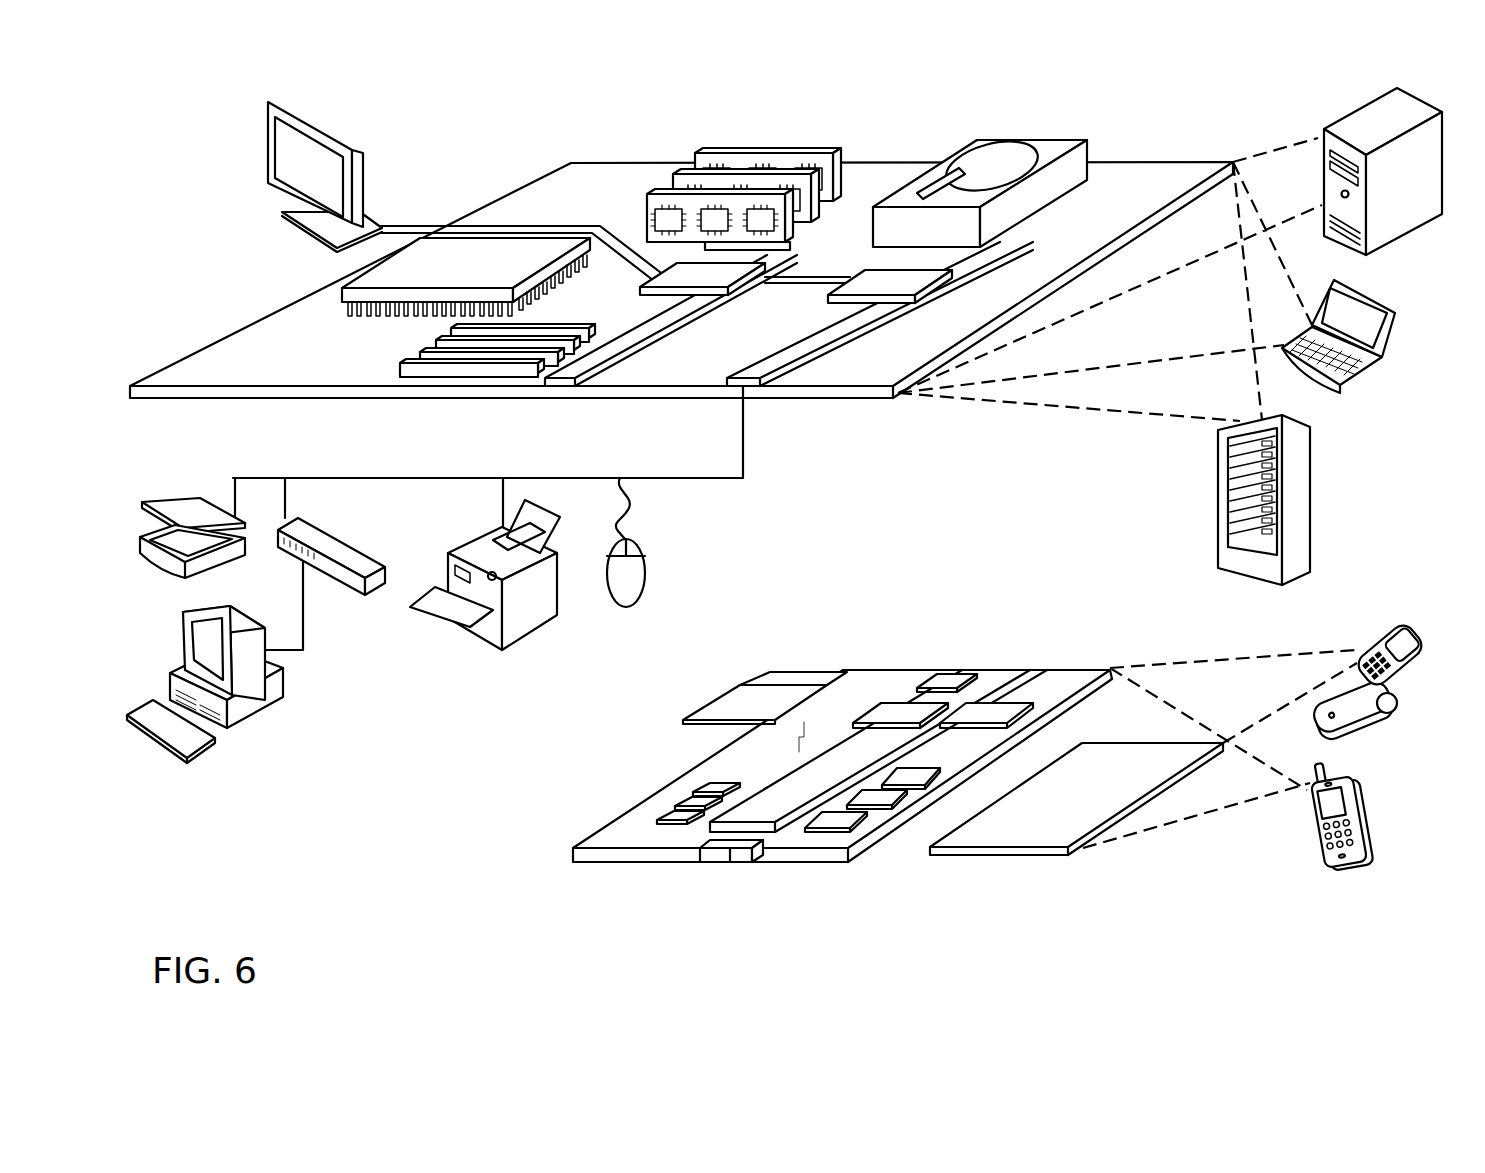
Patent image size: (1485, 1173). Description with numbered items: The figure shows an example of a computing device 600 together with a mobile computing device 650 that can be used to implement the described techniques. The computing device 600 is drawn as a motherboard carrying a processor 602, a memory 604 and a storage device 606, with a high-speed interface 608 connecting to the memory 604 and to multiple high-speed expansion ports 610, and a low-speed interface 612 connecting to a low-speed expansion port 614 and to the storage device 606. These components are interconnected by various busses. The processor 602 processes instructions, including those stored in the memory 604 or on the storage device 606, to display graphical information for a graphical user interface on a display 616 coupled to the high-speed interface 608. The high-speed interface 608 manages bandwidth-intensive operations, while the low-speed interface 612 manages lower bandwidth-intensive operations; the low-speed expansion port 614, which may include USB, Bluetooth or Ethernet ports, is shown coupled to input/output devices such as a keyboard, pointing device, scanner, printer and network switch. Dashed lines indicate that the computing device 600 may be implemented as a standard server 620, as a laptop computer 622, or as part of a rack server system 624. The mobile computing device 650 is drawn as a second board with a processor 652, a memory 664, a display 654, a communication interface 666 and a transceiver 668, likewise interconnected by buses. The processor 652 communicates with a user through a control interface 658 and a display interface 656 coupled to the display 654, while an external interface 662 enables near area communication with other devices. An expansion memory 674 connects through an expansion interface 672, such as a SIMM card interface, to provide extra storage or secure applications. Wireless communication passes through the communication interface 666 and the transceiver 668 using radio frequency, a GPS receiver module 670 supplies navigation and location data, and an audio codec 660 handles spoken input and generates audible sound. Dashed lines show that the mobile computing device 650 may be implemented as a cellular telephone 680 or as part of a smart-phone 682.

The computing device 600 is at (488, 133).
The processor 602 is at (345, 292).
The memory 604 is at (707, 152).
The storage device 606 is at (959, 140).
The high-speed interface 608 is at (678, 272).
The high-speed expansion ports 610 is at (420, 353).
The low-speed interface 612 is at (871, 278).
The low-speed expansion port 614 is at (760, 387).
The display 616 is at (268, 101).
The standard server 620 is at (1323, 147).
The laptop computer 622 is at (1340, 391).
The rack server system 624 is at (1218, 522).
The mobile computing device 650 is at (548, 858).
The processor 652 is at (770, 816).
The display 654 is at (1030, 834).
The display interface 656 is at (845, 830).
The control interface 658 is at (888, 808).
The audio codec 660 is at (908, 778).
The external interface 662 is at (730, 850).
The memory 664 is at (683, 800).
The communication interface 666 is at (900, 712).
The transceiver 668 is at (990, 712).
The GPS receiver module 670 is at (957, 678).
The expansion interface 672 is at (803, 683).
The expansion memory 674 is at (740, 685).
The cellular telephone 680 is at (1373, 618).
The smart-phone 682 is at (1307, 819).